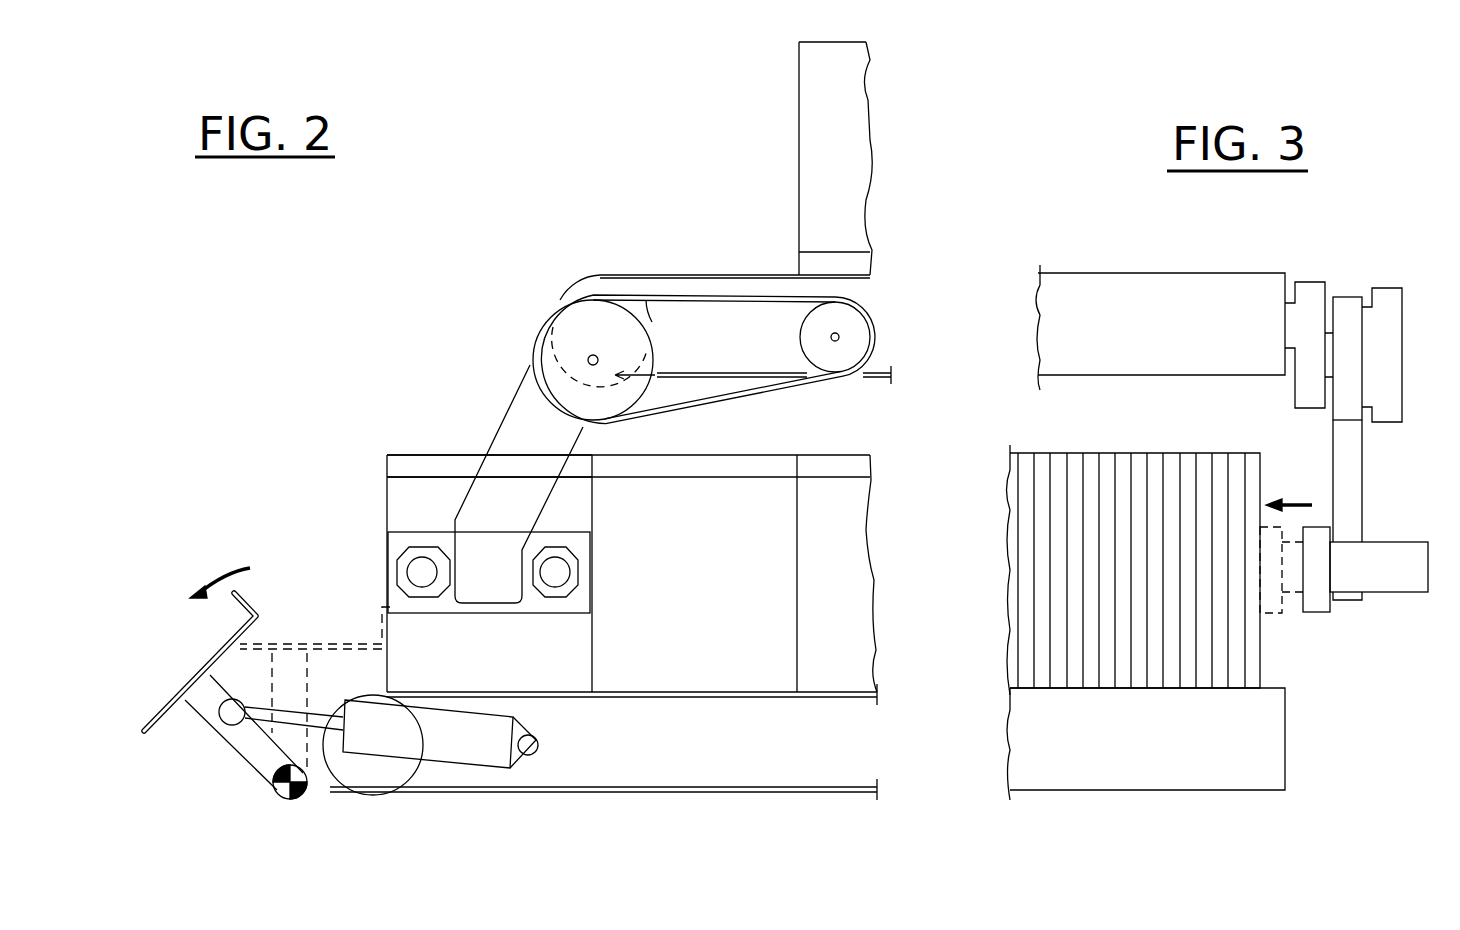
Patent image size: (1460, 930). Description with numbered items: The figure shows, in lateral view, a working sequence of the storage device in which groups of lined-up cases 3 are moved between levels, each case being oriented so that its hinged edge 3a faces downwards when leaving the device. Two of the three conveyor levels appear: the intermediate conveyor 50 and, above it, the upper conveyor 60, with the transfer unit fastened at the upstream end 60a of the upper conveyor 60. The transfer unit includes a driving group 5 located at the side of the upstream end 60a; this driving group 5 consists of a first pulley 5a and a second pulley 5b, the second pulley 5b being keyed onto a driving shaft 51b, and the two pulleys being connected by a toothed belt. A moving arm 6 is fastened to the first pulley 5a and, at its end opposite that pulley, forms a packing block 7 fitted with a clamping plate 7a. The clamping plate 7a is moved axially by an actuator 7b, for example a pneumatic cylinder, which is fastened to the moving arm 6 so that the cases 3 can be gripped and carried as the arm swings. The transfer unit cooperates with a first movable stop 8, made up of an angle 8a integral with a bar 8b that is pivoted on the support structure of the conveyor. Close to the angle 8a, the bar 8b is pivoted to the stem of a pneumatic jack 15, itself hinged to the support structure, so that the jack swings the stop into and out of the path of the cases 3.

In FIG. 2, the case 3 is at (548, 660).
In FIG. 3, the case 3 is at (1010, 592).
In FIG. 2, the hinged edge 3a is at (396, 464).
In FIG. 2, the driving group 5 is at (738, 404).
In FIG. 2, the first pulley 5a is at (550, 367).
In FIG. 2, the second pulley 5b is at (853, 317).
In FIG. 2, the driving shaft 51b is at (839, 337).
In FIG. 2, the moving arm 6 is at (512, 450).
In FIG. 3, the packing block 7 is at (1388, 527).
In FIG. 2, the clamping plate 7a is at (403, 600).
In FIG. 3, the clamping plate 7a is at (1270, 602).
In FIG. 3, the actuator 7b is at (1383, 580).
In FIG. 2, the first movable stop 8 is at (160, 681).
In FIG. 2, the angle 8a is at (165, 720).
In FIG. 2, the bar 8b is at (247, 753).
In FIG. 2, the pneumatic jack 15 is at (448, 740).
In FIG. 2, the intermediate conveyor 50 is at (722, 785).
In FIG. 3, the intermediate conveyor 50 is at (1030, 738).
In FIG. 2, the upper conveyor 60 is at (732, 275).
In FIG. 3, the upper conveyor 60 is at (1058, 337).
In FIG. 2, the upstream end of the upper conveyor 60a is at (582, 264).